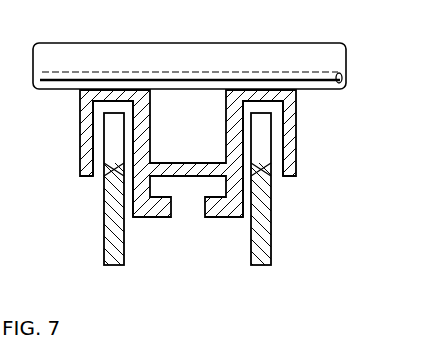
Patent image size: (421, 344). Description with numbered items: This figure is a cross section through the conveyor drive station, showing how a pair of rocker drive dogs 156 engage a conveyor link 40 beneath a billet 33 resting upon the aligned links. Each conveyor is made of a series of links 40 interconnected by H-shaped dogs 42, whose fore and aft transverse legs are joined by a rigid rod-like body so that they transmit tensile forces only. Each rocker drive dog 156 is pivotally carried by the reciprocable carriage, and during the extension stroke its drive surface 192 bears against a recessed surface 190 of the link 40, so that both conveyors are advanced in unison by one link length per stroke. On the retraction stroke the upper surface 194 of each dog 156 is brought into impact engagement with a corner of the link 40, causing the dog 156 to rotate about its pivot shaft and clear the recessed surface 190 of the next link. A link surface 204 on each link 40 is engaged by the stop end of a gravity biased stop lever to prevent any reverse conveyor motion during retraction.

The billet 33 is at (214, 48).
The link 40 is at (282, 142).
The dog 42 is at (192, 193).
The rocker drive dog 156 is at (110, 242).
The recessed surface 190 is at (130, 107).
The drive surface 192 is at (111, 127).
The upper surface 194 is at (111, 152).
The link surface 204 is at (196, 152).